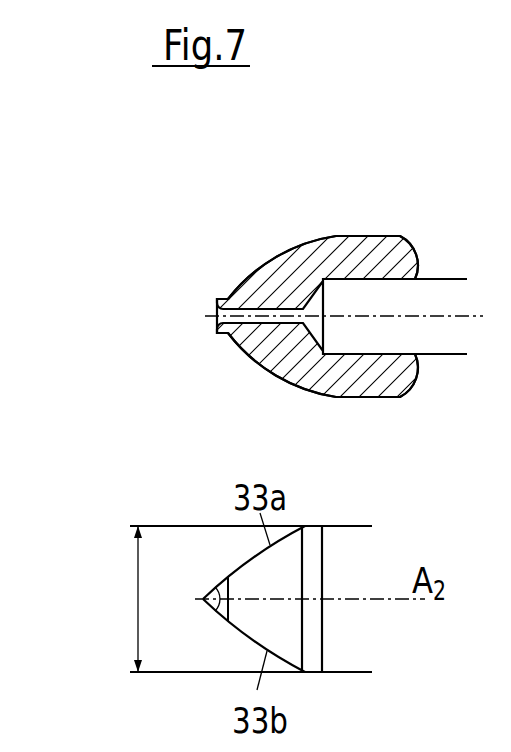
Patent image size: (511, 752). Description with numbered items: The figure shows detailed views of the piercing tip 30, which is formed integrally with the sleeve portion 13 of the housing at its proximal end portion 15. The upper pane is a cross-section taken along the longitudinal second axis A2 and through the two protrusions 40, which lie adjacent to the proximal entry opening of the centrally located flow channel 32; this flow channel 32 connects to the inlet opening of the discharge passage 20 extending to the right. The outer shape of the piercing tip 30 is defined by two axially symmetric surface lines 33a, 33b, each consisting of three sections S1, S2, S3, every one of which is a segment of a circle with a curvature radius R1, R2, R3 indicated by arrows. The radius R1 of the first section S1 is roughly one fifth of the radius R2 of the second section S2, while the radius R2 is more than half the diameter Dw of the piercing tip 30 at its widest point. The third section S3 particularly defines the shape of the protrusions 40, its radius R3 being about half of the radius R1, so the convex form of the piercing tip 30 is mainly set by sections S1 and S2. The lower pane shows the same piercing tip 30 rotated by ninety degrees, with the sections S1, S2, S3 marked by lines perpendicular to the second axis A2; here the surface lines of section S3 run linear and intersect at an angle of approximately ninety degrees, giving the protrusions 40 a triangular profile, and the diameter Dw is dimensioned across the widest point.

The sleeve portion 13 is at (385, 256).
The proximal end portion 15 is at (385, 380).
The discharge passage 20 is at (448, 349).
The piercing tip 30 is at (335, 255).
The flow channel 32 is at (283, 309).
The surface line 33a is at (268, 267).
The surface line 33b is at (258, 353).
The protrusions 40 is at (217, 299).
The longitudinal second axis A2 is at (357, 300).
The curvature radius of first section R1 is at (327, 384).
The curvature radius of second section R2 is at (323, 316).
The curvature radius of third section R3 is at (233, 337).
The first section S1 is at (327, 386).
The second section S2 is at (303, 351).
The third section S3 is at (225, 582).
The diameter of piercing tip Dw is at (116, 599).